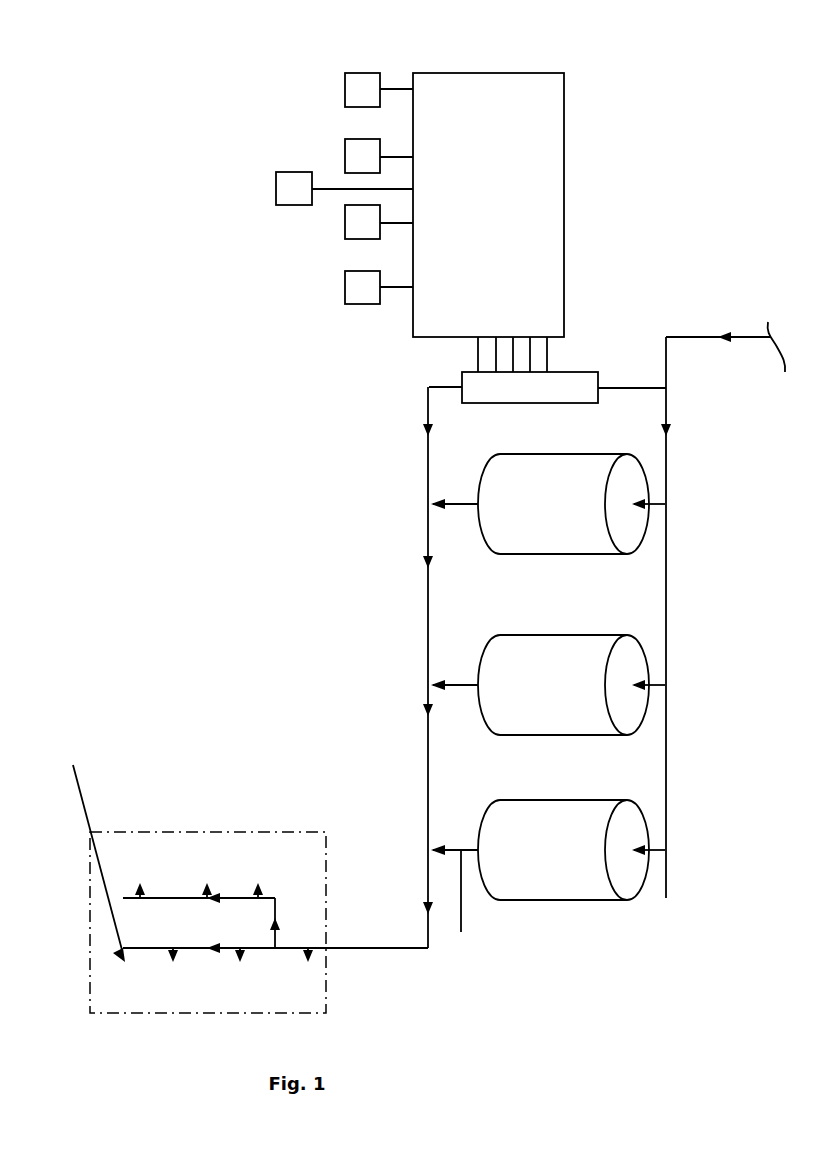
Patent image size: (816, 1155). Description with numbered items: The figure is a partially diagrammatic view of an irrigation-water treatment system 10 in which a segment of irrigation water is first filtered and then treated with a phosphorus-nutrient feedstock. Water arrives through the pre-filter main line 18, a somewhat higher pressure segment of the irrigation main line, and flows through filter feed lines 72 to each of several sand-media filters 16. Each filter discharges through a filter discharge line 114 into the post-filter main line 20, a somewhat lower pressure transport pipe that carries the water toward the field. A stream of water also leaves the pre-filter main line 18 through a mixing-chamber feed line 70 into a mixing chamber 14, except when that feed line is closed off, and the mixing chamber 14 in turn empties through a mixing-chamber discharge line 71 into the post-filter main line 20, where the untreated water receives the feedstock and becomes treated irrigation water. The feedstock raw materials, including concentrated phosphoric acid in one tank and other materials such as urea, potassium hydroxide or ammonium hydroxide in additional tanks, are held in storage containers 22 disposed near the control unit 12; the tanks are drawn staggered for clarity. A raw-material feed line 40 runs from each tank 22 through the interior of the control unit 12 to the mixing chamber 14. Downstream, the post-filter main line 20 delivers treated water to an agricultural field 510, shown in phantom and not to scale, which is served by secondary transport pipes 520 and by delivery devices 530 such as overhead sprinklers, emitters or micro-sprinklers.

The system 10 is at (150, 82).
The control unit 12 is at (564, 172).
The mixing chamber 14 is at (580, 372).
The sand-media filters 16 is at (527, 515).
The pre-filter main line 18 is at (667, 617).
The post-filter main line 20 is at (427, 615).
The storage containers 22 is at (345, 155).
The raw-material feed lines 40 is at (400, 85).
The mixing-chamber feed line 70 is at (633, 385).
The mixing-chamber discharge line 71 is at (443, 387).
The filter feed lines 72 is at (647, 500).
The filter discharge lines 114 is at (455, 500).
The agricultural field 510 is at (208, 832).
The transport pipes 520 is at (242, 898).
The devices 530 is at (140, 883).